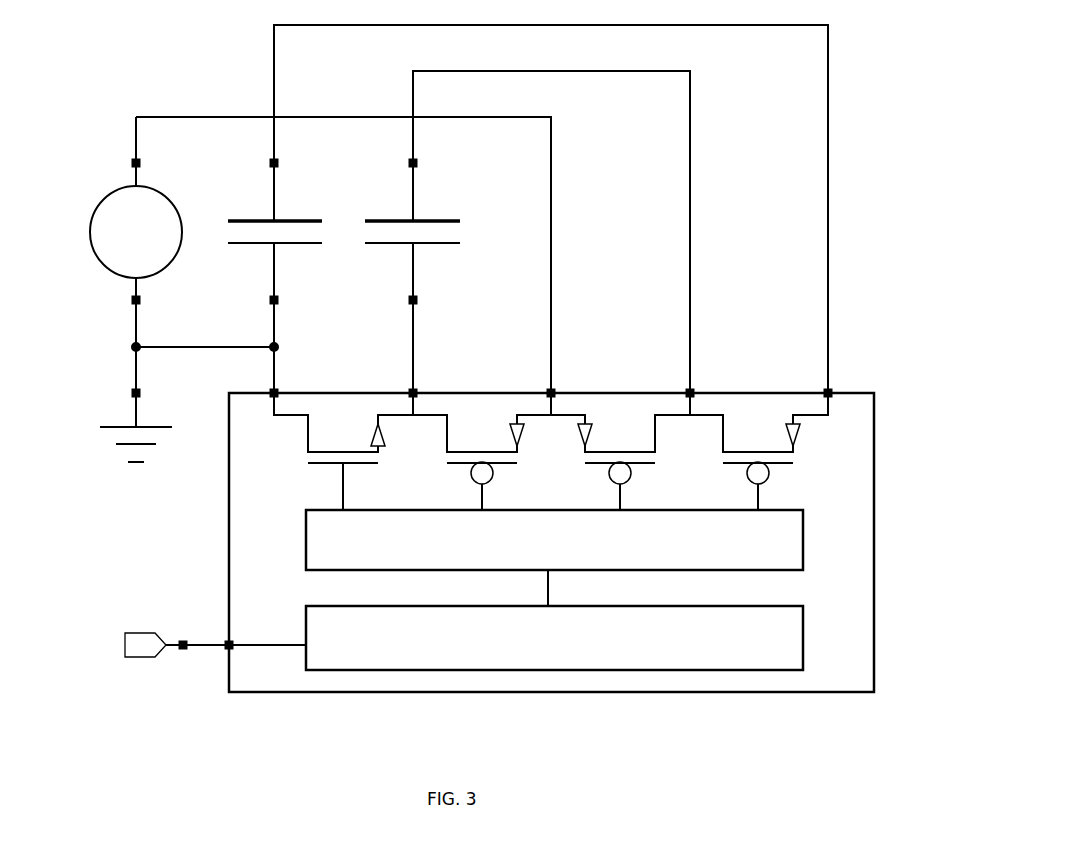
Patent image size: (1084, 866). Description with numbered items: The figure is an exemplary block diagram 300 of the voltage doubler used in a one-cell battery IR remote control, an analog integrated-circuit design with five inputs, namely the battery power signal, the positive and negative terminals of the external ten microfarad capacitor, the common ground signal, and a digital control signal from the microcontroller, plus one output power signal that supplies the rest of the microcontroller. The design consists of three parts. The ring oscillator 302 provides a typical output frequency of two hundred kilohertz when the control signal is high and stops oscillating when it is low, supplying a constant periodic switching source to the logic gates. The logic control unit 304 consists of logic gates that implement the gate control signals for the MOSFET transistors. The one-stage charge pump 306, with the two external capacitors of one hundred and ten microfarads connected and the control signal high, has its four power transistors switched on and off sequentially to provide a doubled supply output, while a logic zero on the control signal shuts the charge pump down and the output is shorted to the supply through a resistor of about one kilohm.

The block diagram 300 is at (687, 742).
The ring oscillator 302 is at (775, 670).
The logic control unit 304 is at (803, 545).
The one-stage charge pump 306 is at (873, 207).